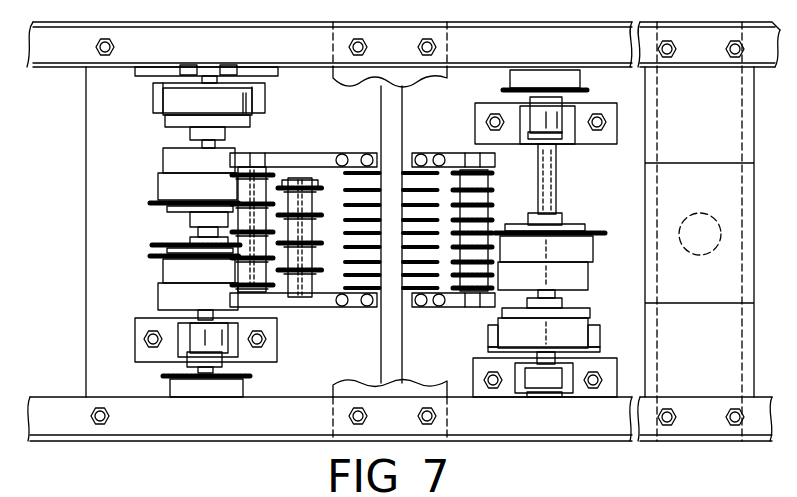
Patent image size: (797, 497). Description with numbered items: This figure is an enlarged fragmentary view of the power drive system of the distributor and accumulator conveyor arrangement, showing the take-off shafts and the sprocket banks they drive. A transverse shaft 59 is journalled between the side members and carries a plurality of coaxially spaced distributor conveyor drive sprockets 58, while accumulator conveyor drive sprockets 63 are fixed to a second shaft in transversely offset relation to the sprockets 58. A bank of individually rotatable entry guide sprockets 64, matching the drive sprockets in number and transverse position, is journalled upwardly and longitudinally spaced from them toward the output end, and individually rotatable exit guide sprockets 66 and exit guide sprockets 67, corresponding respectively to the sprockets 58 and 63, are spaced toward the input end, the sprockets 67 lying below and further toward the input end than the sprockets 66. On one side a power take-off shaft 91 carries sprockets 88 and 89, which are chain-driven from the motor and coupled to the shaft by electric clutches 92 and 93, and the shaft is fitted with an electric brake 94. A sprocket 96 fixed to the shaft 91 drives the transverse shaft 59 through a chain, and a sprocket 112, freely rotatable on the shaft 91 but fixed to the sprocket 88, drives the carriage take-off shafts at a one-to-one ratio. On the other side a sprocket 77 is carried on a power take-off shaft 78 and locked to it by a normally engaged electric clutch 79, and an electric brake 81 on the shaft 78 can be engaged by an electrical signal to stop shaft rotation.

The distributor conveyor drive sprockets 58 is at (342, 278).
The transverse shaft 59 is at (395, 98).
The accumulator conveyor drive sprockets 63 is at (405, 178).
The entry guide sprockets 64 is at (497, 217).
The exit guide sprockets 66 is at (300, 188).
The exit guide sprockets 67 is at (252, 178).
The sprocket 77 is at (588, 233).
The power take-off shaft 78 is at (546, 176).
The electric clutch 79 is at (585, 250).
The electric brake 81 is at (585, 330).
The sprocket 88 is at (150, 256).
The sprocket 89 is at (150, 203).
The power take-off shaft 91 is at (198, 318).
The electric clutch 92 is at (168, 270).
The electric clutch 93 is at (168, 190).
The electric brake 94 is at (176, 100).
The sprocket 96 is at (165, 376).
The sprocket 112 is at (152, 245).